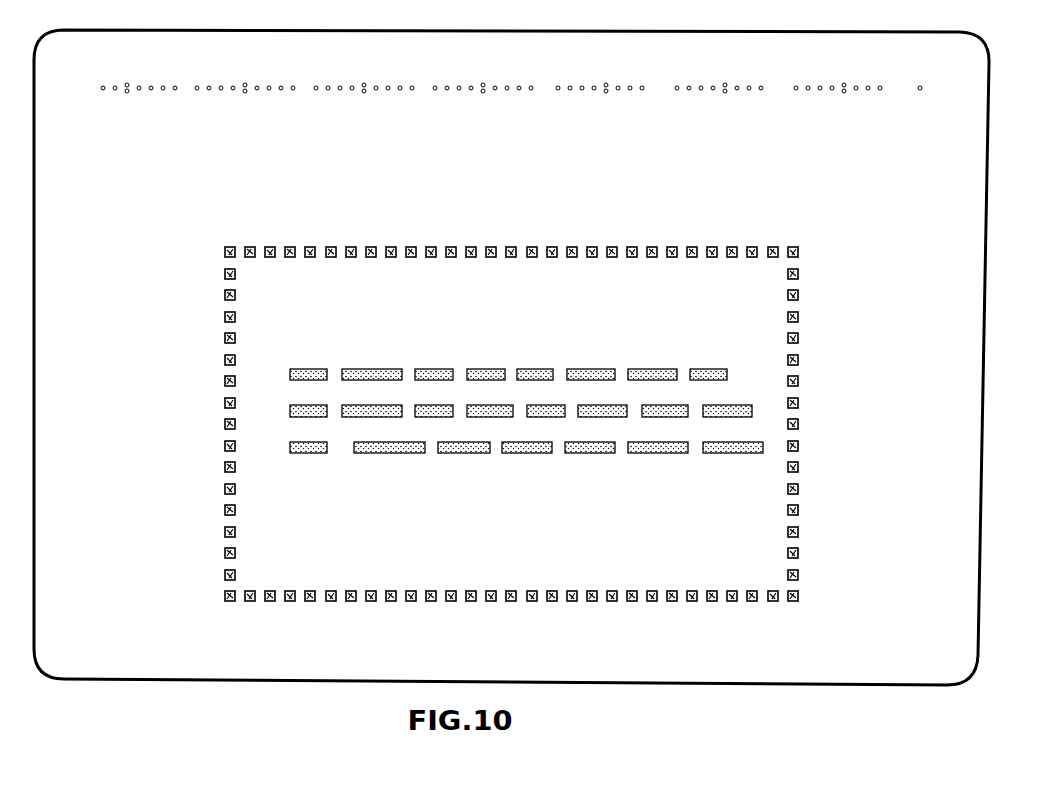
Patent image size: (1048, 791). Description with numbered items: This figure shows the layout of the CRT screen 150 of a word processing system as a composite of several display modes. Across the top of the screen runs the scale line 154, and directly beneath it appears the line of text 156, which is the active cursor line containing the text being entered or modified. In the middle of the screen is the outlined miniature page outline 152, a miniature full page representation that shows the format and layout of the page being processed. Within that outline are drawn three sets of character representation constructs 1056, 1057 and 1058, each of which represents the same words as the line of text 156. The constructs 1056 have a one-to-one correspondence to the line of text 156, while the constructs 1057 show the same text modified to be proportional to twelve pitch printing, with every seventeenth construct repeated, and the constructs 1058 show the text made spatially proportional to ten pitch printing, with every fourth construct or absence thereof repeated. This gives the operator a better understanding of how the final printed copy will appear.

The CRT screen 150 is at (988, 305).
The miniature page outline 152 is at (802, 273).
The scale line 154 is at (932, 82).
The line of text 156 is at (932, 113).
The character representation constructs 1056 is at (290, 373).
The character representation constructs 1057 is at (290, 409).
The character representation constructs 1058 is at (290, 444).